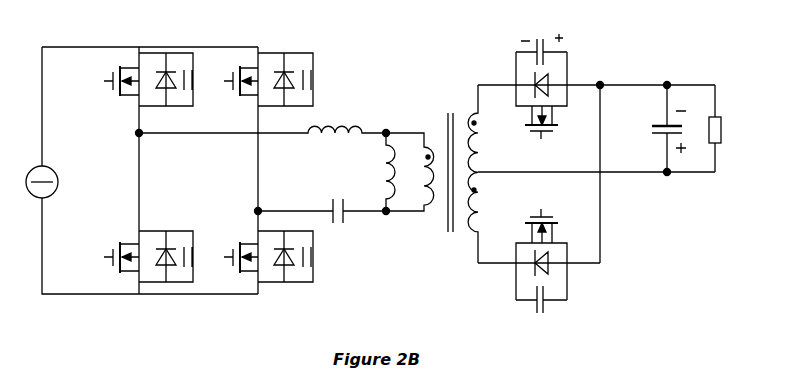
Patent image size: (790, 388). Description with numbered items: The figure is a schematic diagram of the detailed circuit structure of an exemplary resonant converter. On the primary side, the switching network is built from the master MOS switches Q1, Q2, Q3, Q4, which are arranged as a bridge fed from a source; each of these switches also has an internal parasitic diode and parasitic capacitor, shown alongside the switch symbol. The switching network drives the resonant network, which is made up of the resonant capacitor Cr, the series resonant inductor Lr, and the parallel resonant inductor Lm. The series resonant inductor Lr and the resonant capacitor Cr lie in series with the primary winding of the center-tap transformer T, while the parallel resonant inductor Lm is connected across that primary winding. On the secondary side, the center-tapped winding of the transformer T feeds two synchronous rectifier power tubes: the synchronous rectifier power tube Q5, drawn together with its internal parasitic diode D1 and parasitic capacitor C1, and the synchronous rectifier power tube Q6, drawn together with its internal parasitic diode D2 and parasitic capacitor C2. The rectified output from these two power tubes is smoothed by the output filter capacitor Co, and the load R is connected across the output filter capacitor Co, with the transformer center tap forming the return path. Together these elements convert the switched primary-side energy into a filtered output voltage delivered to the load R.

The master MOS switch Q1 is at (145, 84).
The master MOS switch Q2 is at (145, 260).
The master MOS switch Q3 is at (268, 84).
The master MOS switch Q4 is at (265, 260).
The series resonant inductor Lr is at (262, 120).
The resonant capacitor Cr is at (322, 226).
The parallel resonant inductor Lm is at (378, 172).
The center-tap transformer T is at (493, 174).
The internal parasitic diode D1 is at (531, 79).
The internal parasitic diode D2 is at (553, 271).
The parasitic capacitor C1 is at (532, 45).
The parasitic capacitor C2 is at (522, 307).
The synchronous rectifier power tube Q5 is at (545, 131).
The synchronous rectifier power tube Q6 is at (547, 222).
The output filter capacitor Co is at (666, 128).
The load R is at (725, 128).